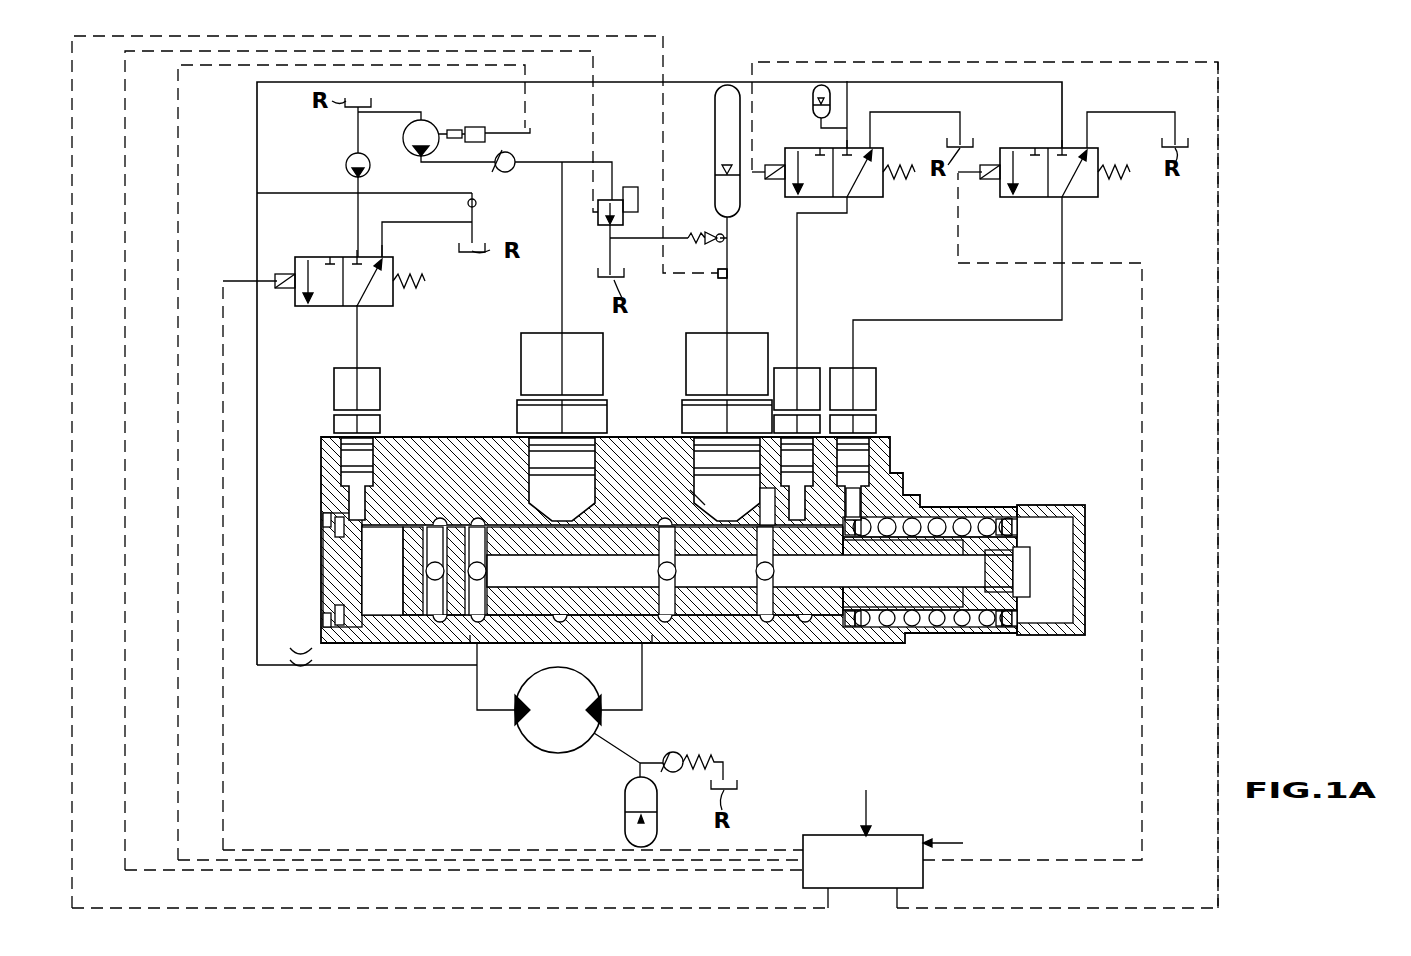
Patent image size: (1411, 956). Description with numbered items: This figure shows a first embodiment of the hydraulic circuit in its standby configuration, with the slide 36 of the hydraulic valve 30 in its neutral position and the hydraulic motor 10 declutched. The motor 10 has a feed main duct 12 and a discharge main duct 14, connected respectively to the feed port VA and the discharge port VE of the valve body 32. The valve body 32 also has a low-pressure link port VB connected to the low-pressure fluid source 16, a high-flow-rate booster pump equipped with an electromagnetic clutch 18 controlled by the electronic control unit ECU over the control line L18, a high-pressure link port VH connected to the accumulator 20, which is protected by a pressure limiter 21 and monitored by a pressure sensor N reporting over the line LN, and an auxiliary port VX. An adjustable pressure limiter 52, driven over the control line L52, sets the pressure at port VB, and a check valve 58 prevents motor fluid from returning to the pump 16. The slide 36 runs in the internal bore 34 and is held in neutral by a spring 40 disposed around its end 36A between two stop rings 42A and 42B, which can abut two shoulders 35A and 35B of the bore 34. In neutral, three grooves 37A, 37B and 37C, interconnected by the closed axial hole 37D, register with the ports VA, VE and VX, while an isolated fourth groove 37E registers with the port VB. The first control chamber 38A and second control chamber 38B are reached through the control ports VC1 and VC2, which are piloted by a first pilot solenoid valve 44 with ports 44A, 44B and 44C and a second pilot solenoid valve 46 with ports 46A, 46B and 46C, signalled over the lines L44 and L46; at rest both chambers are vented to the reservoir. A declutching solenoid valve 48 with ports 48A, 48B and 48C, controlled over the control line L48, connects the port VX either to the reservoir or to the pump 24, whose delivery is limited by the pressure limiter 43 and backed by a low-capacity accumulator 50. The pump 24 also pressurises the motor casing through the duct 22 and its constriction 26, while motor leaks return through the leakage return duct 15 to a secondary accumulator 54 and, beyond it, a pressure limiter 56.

The hydraulic motor 10 is at (550, 748).
The feed main duct 12 is at (625, 711).
The discharge main duct 14 is at (490, 712).
The leakage return duct 15 is at (612, 745).
The low-pressure fluid source 16 is at (432, 122).
The electromagnetic clutch 18 is at (482, 127).
The accumulator 20 is at (715, 120).
The pressure limiter 21 is at (708, 235).
The duct 22 is at (365, 666).
The pump 24 is at (348, 160).
The constriction 26 is at (300, 672).
The hydraulic valve 30 is at (720, 650).
The valve body 32 is at (835, 635).
The internal bore 34 is at (800, 640).
The shoulder 35A is at (860, 630).
The shoulder 35B is at (1010, 632).
The slide 36 is at (925, 518).
The end of the slide 36A is at (1005, 518).
The groove 37A is at (700, 571).
The groove 37B is at (450, 630).
The groove 37C is at (795, 571).
The axial hole 37D is at (645, 571).
The fourth groove 37E is at (625, 522).
The first control chamber 38A is at (385, 540).
The second control chamber 38B is at (1060, 572).
The spring 40 is at (962, 523).
The stop ring 42A is at (870, 626).
The stop ring 42B is at (1003, 630).
The pressure limiter 43 is at (476, 205).
The first pilot solenoid valve 44 is at (381, 289).
The first port 44A is at (355, 306).
The second port 44B is at (355, 256).
The third port 44C is at (385, 255).
The second pilot solenoid valve 46 is at (1020, 238).
The first port 46A is at (1055, 198).
The second port 46B is at (1062, 148).
The third port 46C is at (1088, 148).
The declutching solenoid valve 48 is at (862, 240).
The first port 48A is at (850, 198).
The second port 48B is at (830, 148).
The third port 48C is at (873, 148).
The low-capacity accumulator 50 is at (813, 100).
The adjustable pressure limiter 52 is at (585, 210).
The secondary accumulator 54 is at (625, 820).
The pressure limiter 56 is at (680, 750).
The check valve 58 is at (520, 156).
The control line L18 is at (180, 208).
The line L44 is at (388, 850).
The control line L46 is at (1053, 858).
The control line L48 is at (1218, 472).
The control line L52 is at (335, 870).
The line LN is at (310, 908).
The pressure sensor N is at (720, 278).
The electronic control unit ECU is at (890, 835).
The feed port VA is at (655, 643).
The low-pressure link port VB is at (520, 515).
The first control port VC1 is at (352, 518).
The second control port VC2 is at (860, 490).
The discharge port VE is at (470, 643).
The high-pressure link port VH is at (700, 505).
The auxiliary port VX is at (780, 492).